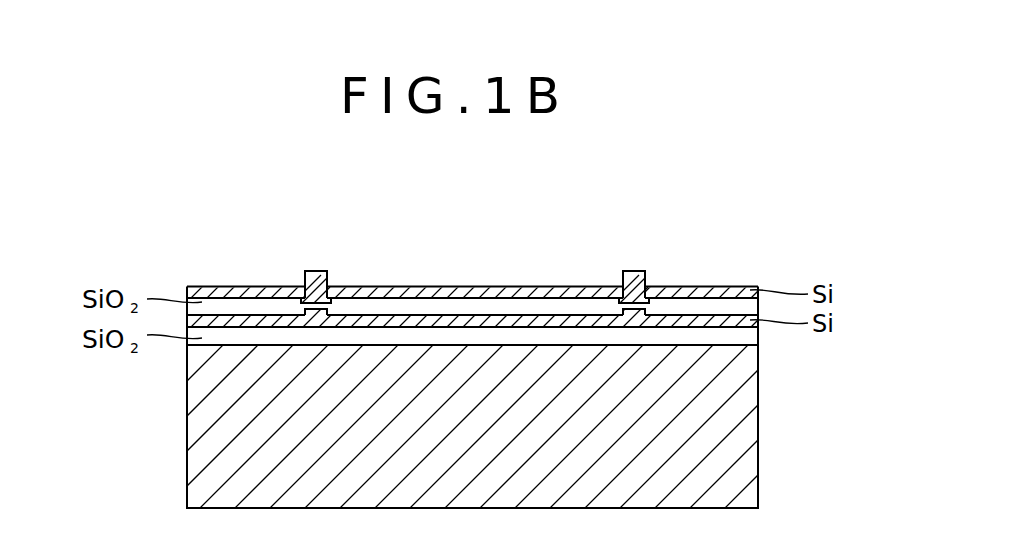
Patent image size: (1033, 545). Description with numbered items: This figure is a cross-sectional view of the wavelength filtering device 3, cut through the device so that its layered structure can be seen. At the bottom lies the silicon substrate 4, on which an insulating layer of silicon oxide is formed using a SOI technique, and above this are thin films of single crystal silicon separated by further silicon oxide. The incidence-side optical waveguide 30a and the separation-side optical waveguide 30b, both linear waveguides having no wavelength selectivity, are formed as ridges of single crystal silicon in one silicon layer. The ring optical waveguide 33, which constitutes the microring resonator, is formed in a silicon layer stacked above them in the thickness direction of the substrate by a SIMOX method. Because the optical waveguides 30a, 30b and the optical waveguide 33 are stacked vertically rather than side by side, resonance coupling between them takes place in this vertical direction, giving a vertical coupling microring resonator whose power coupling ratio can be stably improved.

The wavelength filtering device 3 is at (193, 240).
The silicon substrate 4 is at (735, 435).
The incidence-side optical waveguide 30a is at (307, 313).
The separation-side optical waveguide 30b is at (647, 308).
The ring optical waveguide 33 is at (632, 272).